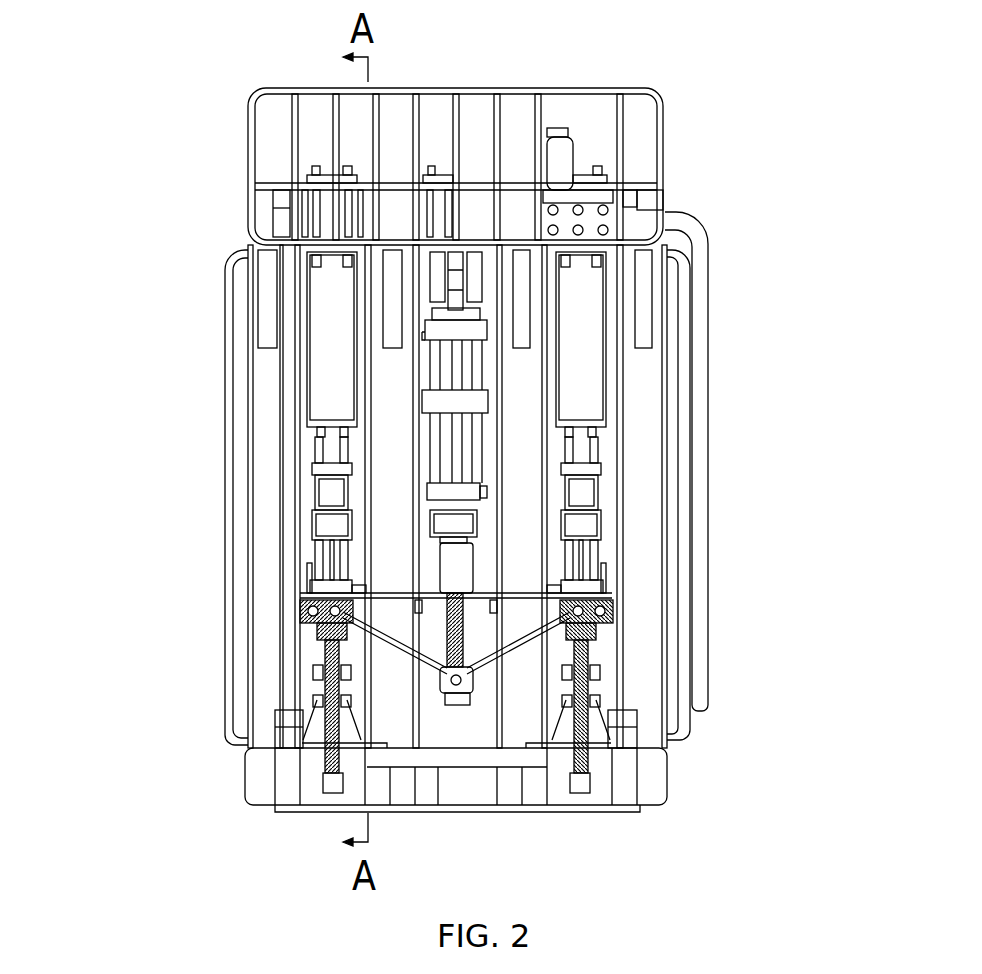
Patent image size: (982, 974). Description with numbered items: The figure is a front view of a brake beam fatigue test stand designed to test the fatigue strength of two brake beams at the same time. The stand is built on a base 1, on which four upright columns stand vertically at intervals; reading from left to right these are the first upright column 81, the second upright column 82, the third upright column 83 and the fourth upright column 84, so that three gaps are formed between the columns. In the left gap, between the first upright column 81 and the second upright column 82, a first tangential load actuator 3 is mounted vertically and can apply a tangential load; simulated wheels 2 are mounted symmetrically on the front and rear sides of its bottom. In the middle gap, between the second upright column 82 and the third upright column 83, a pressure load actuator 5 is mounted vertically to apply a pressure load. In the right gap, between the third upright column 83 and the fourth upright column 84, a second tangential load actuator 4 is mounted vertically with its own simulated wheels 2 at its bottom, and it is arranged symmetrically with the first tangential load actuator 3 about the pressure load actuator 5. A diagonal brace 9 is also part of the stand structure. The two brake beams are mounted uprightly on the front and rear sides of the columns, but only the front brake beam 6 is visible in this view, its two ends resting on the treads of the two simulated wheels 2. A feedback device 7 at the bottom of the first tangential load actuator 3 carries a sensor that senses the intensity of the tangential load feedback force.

The base 1 is at (262, 778).
The simulated wheel 2 is at (323, 677).
The first tangential load actuator 3 is at (332, 395).
The second tangential load actuator 4 is at (595, 370).
The pressure load actuator 5 is at (470, 482).
The brake beam 6 is at (520, 597).
The feedback device 7 is at (300, 598).
The diagonal brace 9 is at (292, 305).
The first upright column 81 is at (267, 483).
The second upright column 82 is at (405, 410).
The third upright column 83 is at (522, 527).
The fourth upright column 84 is at (643, 675).